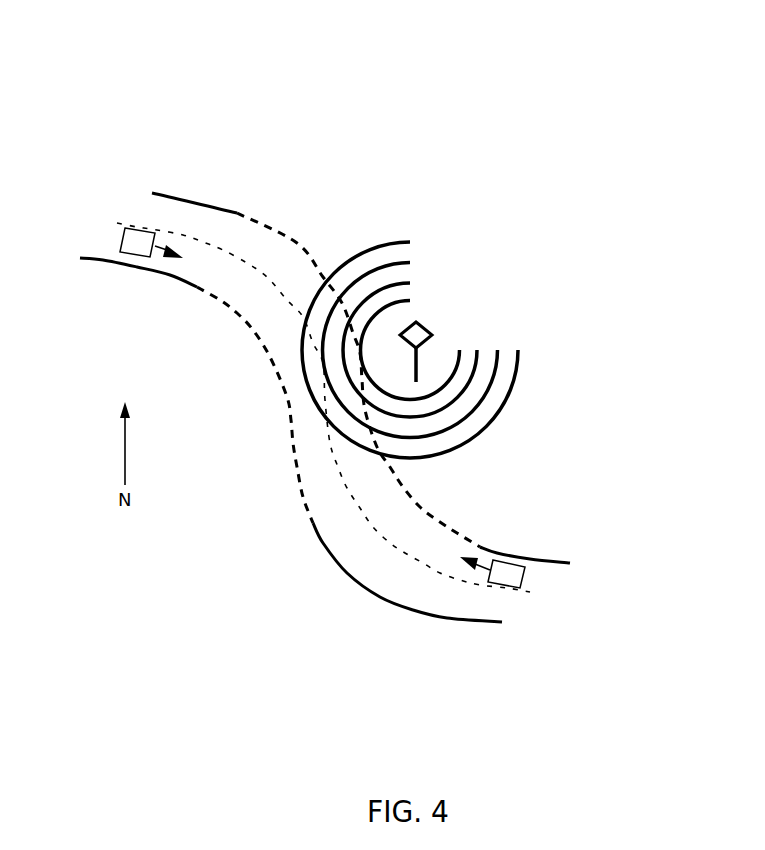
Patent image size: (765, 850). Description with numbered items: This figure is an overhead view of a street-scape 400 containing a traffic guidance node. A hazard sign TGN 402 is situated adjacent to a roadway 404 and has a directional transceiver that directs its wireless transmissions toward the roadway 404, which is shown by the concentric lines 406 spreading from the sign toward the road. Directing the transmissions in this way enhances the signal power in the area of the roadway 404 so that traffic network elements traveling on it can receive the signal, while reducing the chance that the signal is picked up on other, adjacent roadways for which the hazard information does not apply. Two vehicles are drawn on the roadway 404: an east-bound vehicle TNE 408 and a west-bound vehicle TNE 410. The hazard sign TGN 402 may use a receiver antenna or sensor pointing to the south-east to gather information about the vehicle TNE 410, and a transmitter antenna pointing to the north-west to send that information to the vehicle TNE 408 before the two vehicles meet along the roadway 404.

The street-scape 400 is at (626, 82).
The hazard sign TGN 402 is at (436, 327).
The roadway 404 is at (183, 280).
The concentric lines 406 is at (394, 245).
The east-bound vehicle TNE 408 is at (122, 239).
The vehicle TNE 410 is at (527, 578).